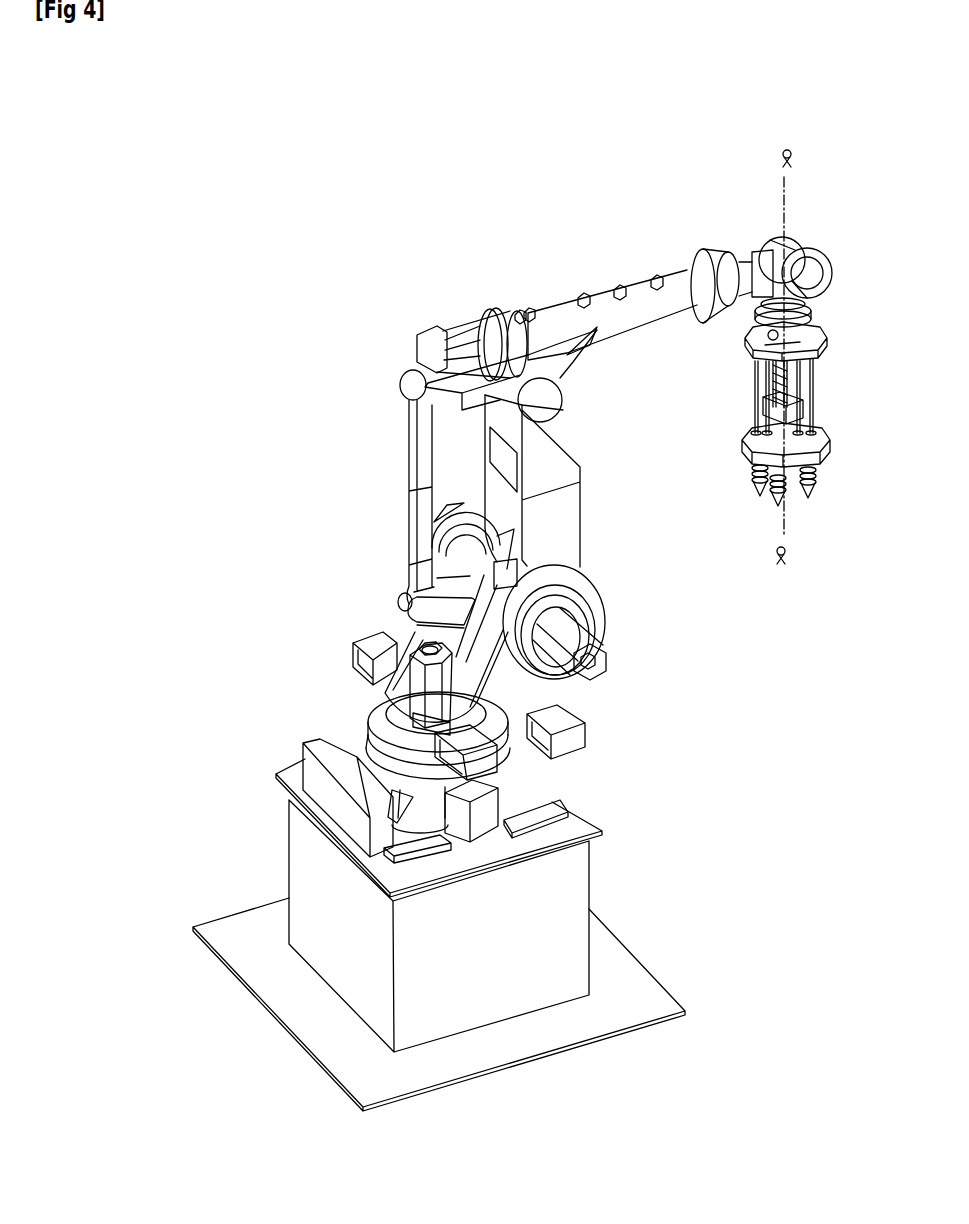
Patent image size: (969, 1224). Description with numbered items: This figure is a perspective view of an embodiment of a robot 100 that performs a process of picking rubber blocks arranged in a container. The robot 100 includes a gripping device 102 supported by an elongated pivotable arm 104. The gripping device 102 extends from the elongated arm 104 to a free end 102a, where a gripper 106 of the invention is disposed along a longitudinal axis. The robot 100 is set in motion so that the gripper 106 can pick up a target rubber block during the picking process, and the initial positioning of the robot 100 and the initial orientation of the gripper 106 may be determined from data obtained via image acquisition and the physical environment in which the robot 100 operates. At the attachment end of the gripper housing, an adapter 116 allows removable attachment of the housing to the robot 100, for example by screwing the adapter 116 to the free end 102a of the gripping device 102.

The robot 100 is at (382, 285).
The gripping device 102 is at (638, 315).
The free end 102a is at (727, 250).
The elongated pivotable arm 104 is at (560, 528).
The gripper 106 is at (797, 390).
The adapter 116 is at (815, 313).